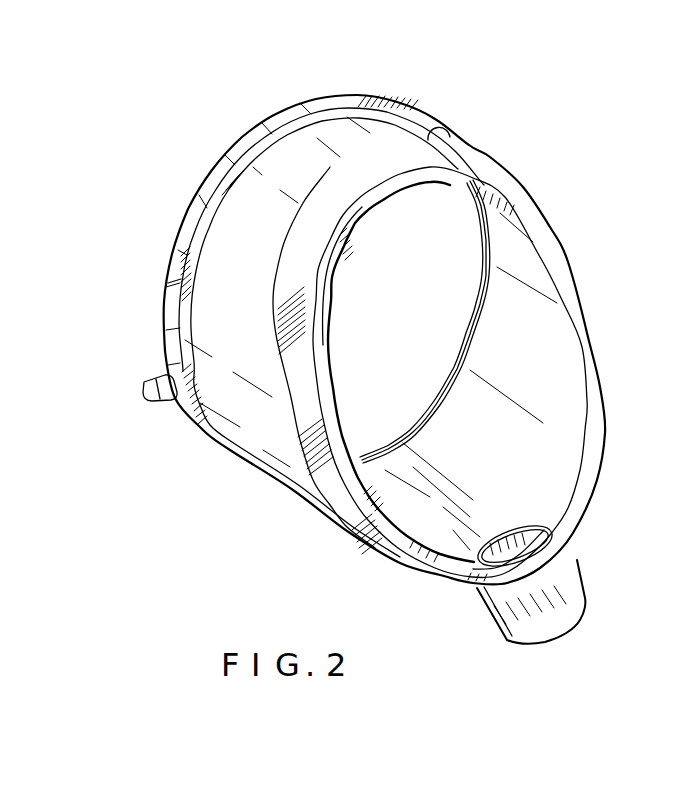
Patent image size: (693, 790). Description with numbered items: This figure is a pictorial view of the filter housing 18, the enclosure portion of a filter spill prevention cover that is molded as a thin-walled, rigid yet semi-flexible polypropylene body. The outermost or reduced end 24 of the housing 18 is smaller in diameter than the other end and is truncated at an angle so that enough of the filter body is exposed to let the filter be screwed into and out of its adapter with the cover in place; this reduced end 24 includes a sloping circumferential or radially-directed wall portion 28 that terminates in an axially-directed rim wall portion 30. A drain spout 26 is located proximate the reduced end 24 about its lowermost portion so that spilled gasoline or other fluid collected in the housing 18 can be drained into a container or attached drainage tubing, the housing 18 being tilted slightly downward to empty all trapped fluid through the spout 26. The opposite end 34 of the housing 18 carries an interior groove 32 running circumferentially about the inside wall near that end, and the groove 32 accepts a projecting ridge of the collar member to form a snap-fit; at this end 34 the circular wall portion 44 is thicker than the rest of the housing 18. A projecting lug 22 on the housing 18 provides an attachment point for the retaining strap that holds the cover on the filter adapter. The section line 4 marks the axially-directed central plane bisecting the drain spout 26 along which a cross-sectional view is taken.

The section line 4- 4 is at (303, 97).
The filter housing 18 is at (270, 483).
The projecting lug 22 is at (158, 390).
The reduced open end 24 is at (605, 430).
The drain spout 26 is at (577, 567).
The sloping circumferential wall portion 28 is at (442, 143).
The rim wall portion 30 is at (555, 258).
The interior groove 32 is at (483, 312).
The opposite end 34 is at (483, 248).
The circular wall portion 44 is at (375, 94).